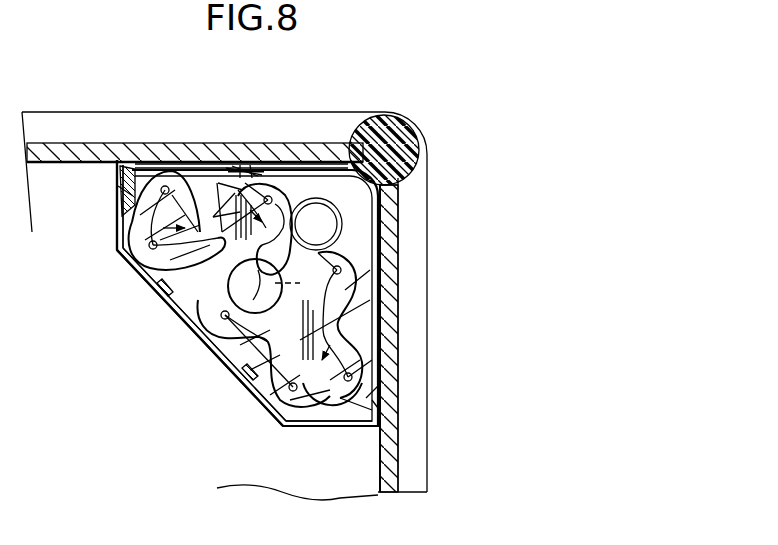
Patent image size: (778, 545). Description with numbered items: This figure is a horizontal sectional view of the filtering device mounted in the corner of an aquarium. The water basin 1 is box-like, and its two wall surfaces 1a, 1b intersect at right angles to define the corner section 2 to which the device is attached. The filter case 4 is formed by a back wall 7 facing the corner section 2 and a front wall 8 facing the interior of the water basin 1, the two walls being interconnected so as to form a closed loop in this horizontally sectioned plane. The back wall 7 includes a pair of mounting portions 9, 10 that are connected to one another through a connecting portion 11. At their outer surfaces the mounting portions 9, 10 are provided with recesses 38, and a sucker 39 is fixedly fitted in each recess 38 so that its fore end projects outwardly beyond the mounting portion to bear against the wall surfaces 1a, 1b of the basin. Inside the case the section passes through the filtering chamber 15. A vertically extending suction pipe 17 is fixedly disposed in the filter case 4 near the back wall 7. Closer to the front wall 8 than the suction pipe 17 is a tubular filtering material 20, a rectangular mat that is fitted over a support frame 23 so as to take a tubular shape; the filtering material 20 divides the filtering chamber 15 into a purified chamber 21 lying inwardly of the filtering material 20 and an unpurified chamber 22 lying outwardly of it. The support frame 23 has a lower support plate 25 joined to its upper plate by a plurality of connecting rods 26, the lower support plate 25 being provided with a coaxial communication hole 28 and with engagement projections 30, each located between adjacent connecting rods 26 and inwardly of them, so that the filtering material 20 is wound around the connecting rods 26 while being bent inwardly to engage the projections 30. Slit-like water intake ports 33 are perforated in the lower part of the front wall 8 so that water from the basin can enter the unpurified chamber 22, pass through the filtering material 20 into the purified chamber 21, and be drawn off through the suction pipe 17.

The water basin 1 is at (404, 413).
The wall surface 1a is at (288, 150).
The wall surface 1b is at (384, 132).
The corner section 2 is at (223, 112).
The filter case 4 is at (243, 400).
The back wall 7 is at (380, 226).
The front wall 8 is at (348, 424).
The mounting portion 9 is at (173, 163).
The mounting portion 10 is at (379, 365).
The connecting portion 11 is at (400, 183).
The filtering chamber 15 is at (130, 273).
The suction pipe 17 is at (343, 233).
The tubular filtering material 20 is at (222, 327).
The purified chamber 21 is at (307, 278).
The unpurified chamber 22 is at (188, 311).
The support frame 23 is at (312, 378).
The lower support plate 25 is at (124, 211).
The connecting rod 26 is at (380, 388).
The communication hole 28 is at (170, 290).
The engagement projection 30 is at (300, 333).
The water intake port 33 is at (240, 373).
The recess 38 is at (248, 166).
The sucker 39 is at (234, 166).